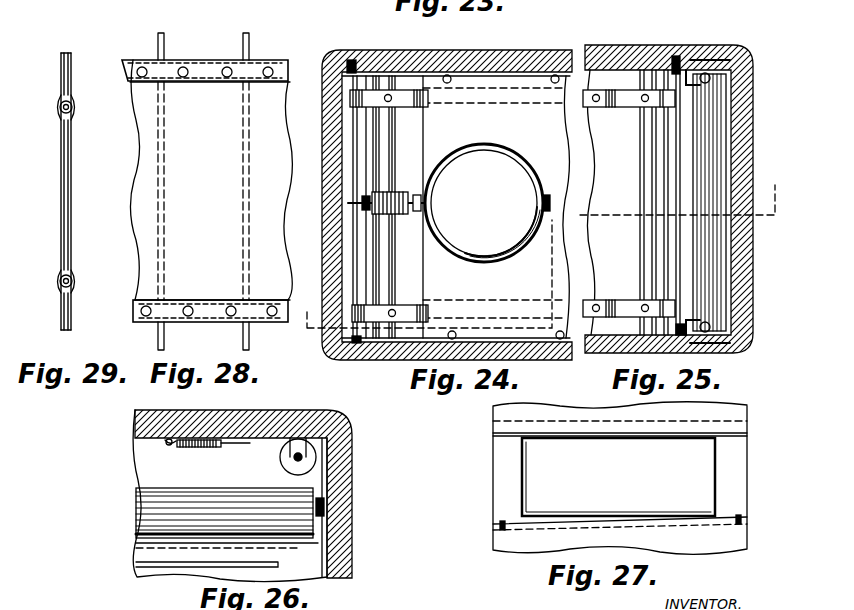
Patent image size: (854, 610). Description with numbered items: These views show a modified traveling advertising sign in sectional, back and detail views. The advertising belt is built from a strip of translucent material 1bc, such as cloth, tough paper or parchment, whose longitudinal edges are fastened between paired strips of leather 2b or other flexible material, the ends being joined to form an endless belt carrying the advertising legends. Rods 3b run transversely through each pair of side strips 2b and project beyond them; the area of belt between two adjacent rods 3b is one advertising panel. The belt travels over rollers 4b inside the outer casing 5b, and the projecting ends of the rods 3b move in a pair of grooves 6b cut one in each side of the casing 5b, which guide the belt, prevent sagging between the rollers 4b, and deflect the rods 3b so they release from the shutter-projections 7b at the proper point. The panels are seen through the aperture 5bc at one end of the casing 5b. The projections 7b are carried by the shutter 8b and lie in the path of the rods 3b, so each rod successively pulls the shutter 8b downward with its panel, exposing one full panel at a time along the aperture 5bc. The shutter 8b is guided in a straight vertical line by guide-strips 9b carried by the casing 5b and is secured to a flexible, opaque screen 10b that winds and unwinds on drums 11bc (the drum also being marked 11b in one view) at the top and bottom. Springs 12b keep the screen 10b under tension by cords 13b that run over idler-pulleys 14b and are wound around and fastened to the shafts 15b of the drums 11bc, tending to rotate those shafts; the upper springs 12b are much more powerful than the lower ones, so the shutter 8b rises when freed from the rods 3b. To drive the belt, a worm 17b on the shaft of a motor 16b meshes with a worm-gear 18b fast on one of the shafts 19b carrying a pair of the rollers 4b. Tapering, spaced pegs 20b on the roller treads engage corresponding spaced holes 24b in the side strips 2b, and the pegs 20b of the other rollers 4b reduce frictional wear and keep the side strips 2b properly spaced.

In FIG. 29, the strip of translucent material 1bc is at (71, 150).
In FIG. 28, the strip of translucent material 1bc is at (143, 166).
In FIG. 29, the paired strips of leather 2b is at (71, 136).
In FIG. 28, the paired strips of leather 2b is at (205, 65).
In FIG. 29, the rods 3b is at (72, 108).
In FIG. 28, the rods 3b is at (166, 40).
In FIG. 24, the rollers 4b is at (428, 102).
In FIG. 25, the rollers 4b is at (628, 103).
In FIG. 28, the outer casing 5b is at (250, 41).
In FIG. 24, the outer casing 5b is at (485, 56).
In FIG. 25, the aperture 5bc is at (746, 166).
In FIG. 24, the grooves 6b is at (352, 62).
In FIG. 25, the grooves 6b is at (678, 58).
In FIG. 25, the shutter-projections 7b is at (712, 66).
In FIG. 27, the shutter-projections 7b is at (500, 527).
In FIG. 25, the shutter 8b is at (694, 141).
In FIG. 26, the shutter 8b is at (219, 568).
In FIG. 27, the shutter 8b is at (620, 478).
In FIG. 25, the guide-strips 9b is at (724, 50).
In FIG. 26, the flexible opaque screen 10b is at (300, 541).
In FIG. 27, the flexible opaque screen 10b is at (620, 482).
In FIG. 25, the roller 11b is at (713, 247).
In FIG. 26, the drums 11bc is at (150, 508).
In FIG. 26, the springs 12b is at (196, 449).
In FIG. 26, the cords 13b is at (252, 446).
In FIG. 26, the idler-pulleys 14b is at (317, 456).
In FIG. 26, the shafts 15b is at (327, 503).
In FIG. 24, the motor 16b is at (487, 203).
In FIG. 24, the worm 17b is at (400, 198).
In FIG. 24, the worm-gear 18b is at (372, 205).
In FIG. 24, the shafts 19b is at (393, 262).
In FIG. 24, the pegs 20b is at (390, 101).
In FIG. 28, the holes 24b is at (271, 67).